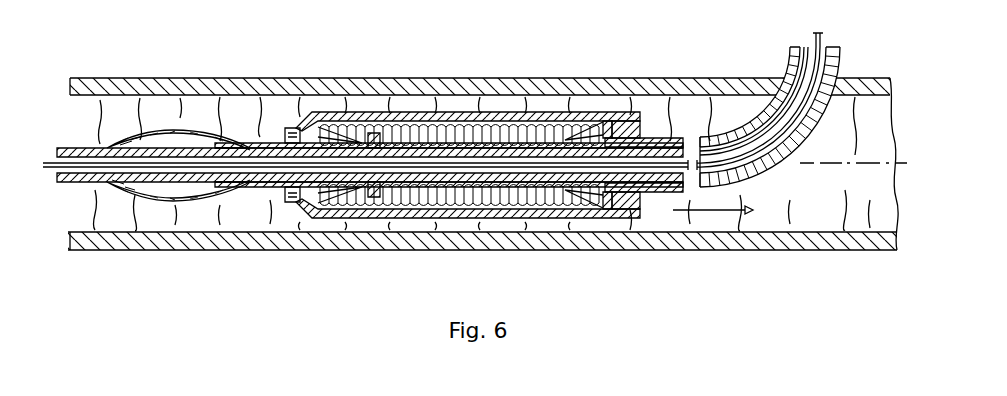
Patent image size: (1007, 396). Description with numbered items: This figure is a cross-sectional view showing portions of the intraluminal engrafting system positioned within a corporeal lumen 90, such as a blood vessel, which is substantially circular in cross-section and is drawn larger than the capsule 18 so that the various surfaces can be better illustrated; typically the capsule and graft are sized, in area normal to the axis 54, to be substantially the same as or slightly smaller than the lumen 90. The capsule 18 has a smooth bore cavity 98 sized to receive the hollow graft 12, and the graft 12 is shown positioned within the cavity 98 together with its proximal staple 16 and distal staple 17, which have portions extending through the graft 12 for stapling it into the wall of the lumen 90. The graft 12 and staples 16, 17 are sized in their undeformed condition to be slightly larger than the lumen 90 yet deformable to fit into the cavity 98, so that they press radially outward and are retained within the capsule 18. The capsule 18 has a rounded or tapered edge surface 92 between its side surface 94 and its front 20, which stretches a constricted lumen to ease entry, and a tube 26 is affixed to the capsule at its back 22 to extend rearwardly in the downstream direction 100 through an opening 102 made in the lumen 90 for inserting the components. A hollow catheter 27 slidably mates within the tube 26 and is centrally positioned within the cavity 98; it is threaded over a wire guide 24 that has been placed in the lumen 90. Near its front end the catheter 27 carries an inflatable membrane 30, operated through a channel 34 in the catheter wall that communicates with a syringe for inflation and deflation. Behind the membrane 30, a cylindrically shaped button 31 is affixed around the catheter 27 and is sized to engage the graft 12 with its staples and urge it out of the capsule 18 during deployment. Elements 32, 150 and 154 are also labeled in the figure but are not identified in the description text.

The graft 12 is at (540, 130).
The proximal staple 16 is at (340, 125).
The distal staple 17 is at (593, 122).
The capsule 18 is at (483, 97).
The front 20 is at (270, 137).
The back 22 is at (617, 112).
The wire guide 24 is at (817, 36).
The tube 26 is at (686, 143).
The catheter 27 is at (510, 130).
The inflatable membrane 30 is at (197, 228).
The button 31 is at (392, 212).
The retainer 32 is at (318, 217).
The channel 34 is at (663, 143).
The axis 54 is at (891, 163).
The lumen 90 is at (226, 78).
The tapered edge surface 92 is at (286, 128).
The side surface 94 is at (322, 128).
The cavity 98 is at (292, 205).
The downstream direction 100 is at (712, 232).
The opening 102 is at (779, 78).
The body vessel 150 is at (437, 97).
The vessel lumen 154 is at (412, 102).